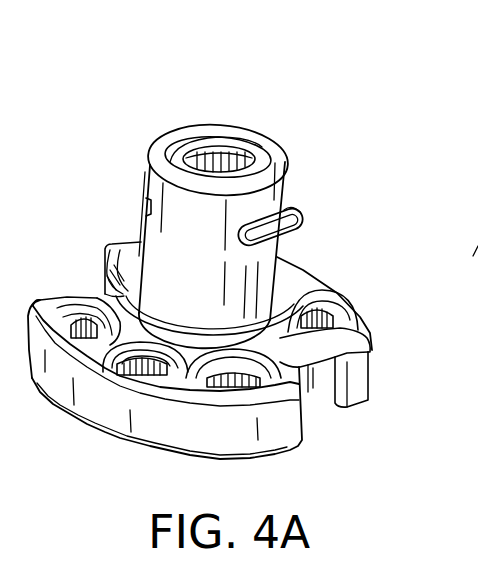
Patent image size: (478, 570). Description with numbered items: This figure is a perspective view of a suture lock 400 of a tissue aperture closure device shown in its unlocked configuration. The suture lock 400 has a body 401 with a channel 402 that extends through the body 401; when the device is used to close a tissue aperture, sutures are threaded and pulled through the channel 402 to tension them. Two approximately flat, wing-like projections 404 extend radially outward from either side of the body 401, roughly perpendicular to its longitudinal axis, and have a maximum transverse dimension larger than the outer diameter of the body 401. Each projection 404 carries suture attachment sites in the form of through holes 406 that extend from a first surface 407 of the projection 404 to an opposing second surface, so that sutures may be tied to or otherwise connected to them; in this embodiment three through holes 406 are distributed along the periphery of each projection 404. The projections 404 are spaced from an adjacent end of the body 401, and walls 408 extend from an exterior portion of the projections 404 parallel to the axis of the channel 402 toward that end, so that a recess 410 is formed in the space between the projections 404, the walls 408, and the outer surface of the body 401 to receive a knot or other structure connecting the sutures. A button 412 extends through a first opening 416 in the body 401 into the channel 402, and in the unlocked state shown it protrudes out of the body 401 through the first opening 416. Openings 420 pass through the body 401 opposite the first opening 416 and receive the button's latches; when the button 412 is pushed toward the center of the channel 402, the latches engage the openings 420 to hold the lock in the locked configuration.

The suture lock 400 is at (178, 88).
The body 401 is at (151, 187).
The channel 402 is at (231, 157).
The projections 404 is at (41, 306).
The through holes 406 is at (247, 384).
The first surface 407 is at (104, 288).
The walls 408 is at (148, 426).
The recess 410 is at (317, 368).
The button 412 is at (305, 226).
The first opening 416 is at (300, 217).
The openings 420 is at (145, 207).